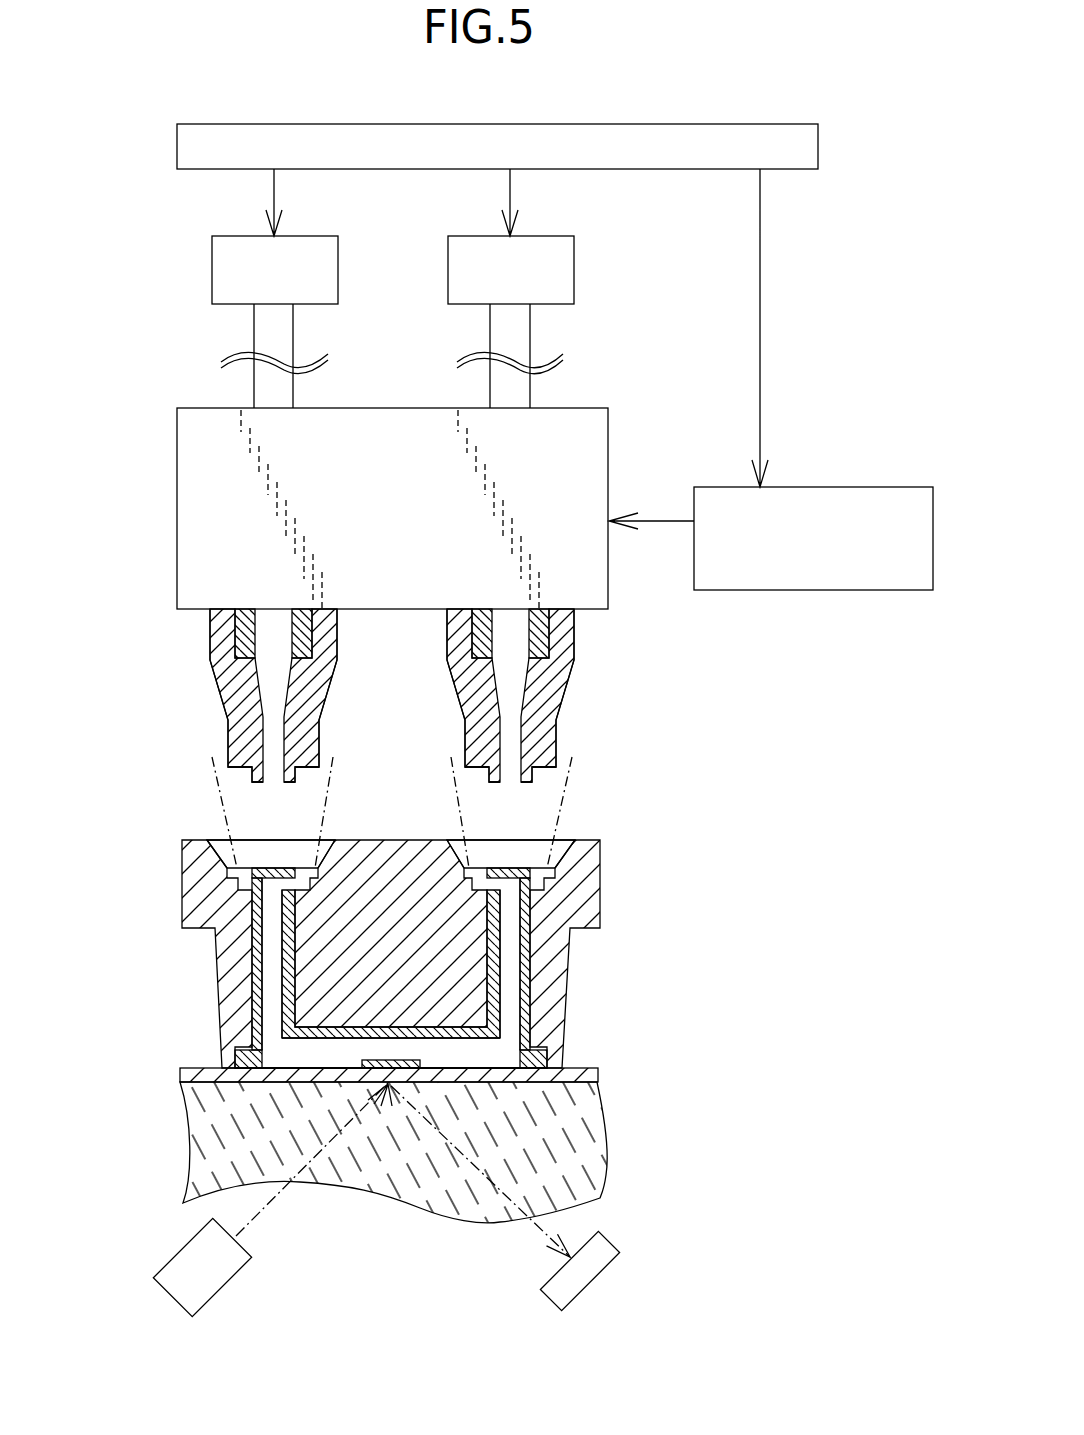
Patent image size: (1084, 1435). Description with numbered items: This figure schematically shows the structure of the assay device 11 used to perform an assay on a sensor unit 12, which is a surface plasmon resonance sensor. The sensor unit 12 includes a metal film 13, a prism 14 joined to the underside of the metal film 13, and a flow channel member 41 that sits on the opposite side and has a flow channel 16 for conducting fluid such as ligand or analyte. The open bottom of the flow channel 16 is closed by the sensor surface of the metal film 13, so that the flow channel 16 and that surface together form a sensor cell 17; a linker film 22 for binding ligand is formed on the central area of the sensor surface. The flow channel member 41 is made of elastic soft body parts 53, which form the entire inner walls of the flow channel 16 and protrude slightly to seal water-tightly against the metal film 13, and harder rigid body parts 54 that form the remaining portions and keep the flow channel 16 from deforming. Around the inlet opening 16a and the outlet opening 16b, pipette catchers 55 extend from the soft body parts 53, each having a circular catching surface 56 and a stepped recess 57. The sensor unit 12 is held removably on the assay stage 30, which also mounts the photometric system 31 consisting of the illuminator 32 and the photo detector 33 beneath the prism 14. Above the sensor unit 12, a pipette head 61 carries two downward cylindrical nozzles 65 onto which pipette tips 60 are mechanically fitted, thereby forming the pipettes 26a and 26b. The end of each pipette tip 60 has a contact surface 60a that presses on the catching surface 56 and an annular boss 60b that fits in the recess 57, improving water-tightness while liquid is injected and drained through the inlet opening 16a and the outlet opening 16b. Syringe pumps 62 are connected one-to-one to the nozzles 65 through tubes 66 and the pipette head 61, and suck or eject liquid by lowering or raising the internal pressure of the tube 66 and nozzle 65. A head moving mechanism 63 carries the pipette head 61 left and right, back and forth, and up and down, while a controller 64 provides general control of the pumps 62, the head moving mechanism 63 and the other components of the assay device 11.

The assay device 11 is at (210, 87).
The sensor unit 12 is at (612, 840).
The metal film 13 is at (610, 1080).
The prism 14 is at (605, 1172).
The flow channel 16 is at (540, 988).
The inlet opening 16a is at (273, 868).
The outlet opening 16b is at (510, 868).
The sensor cell 17 is at (530, 1040).
The linker film 22 is at (372, 1089).
The pipette 26a is at (140, 628).
The pipette 26b is at (657, 627).
The assay stage 30 is at (338, 1200).
The photometric system 31 is at (386, 1267).
The illuminator 32 is at (228, 1290).
The photo detector 33 is at (545, 1300).
The flow channel member 41 is at (168, 917).
The soft body parts 53 is at (524, 952).
The rigid body parts 54 is at (394, 846).
The pipette catcher 55 is at (210, 873).
The catching surface 56 is at (235, 845).
The stepped recess 57 is at (300, 855).
The pipette tip 60 is at (230, 685).
The contact surface 60a is at (240, 776).
The annular boss 60b is at (258, 790).
The pipette head 61 is at (182, 508).
The pump 62 is at (212, 270).
The head moving mechanism 63 is at (757, 591).
The controller 64 is at (672, 124).
The nozzle 65 is at (232, 632).
The tube 66 is at (254, 328).